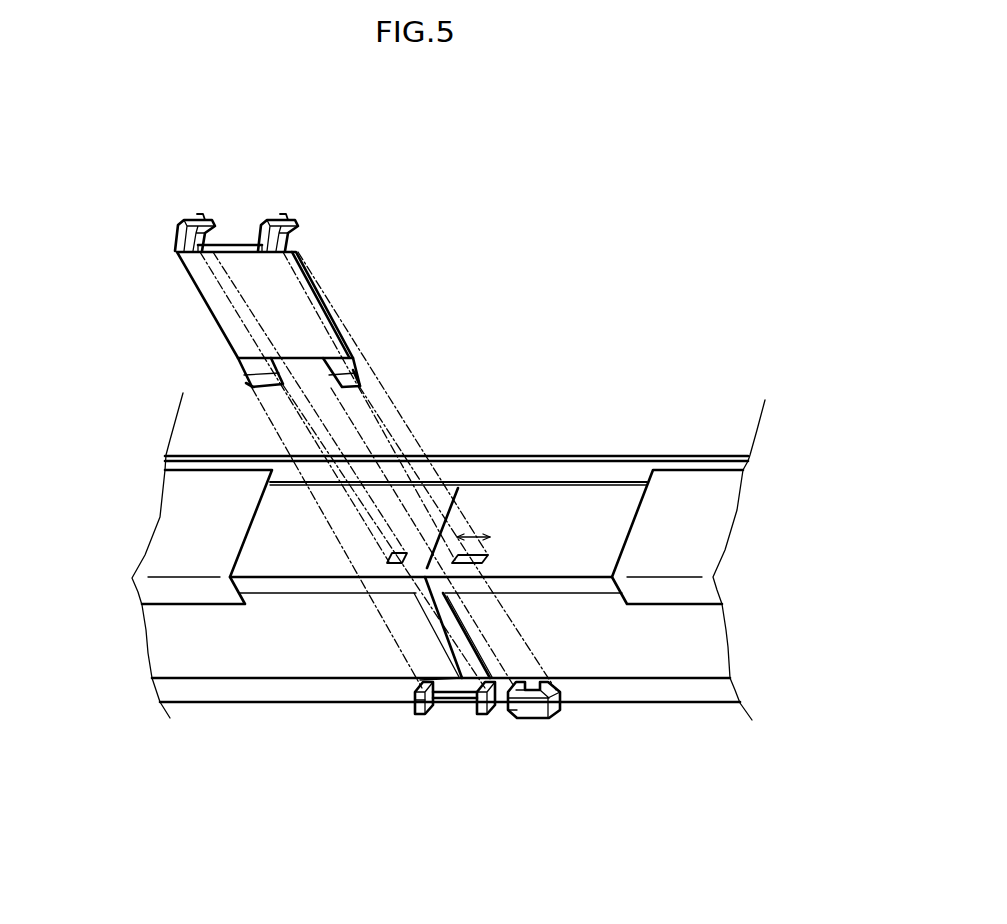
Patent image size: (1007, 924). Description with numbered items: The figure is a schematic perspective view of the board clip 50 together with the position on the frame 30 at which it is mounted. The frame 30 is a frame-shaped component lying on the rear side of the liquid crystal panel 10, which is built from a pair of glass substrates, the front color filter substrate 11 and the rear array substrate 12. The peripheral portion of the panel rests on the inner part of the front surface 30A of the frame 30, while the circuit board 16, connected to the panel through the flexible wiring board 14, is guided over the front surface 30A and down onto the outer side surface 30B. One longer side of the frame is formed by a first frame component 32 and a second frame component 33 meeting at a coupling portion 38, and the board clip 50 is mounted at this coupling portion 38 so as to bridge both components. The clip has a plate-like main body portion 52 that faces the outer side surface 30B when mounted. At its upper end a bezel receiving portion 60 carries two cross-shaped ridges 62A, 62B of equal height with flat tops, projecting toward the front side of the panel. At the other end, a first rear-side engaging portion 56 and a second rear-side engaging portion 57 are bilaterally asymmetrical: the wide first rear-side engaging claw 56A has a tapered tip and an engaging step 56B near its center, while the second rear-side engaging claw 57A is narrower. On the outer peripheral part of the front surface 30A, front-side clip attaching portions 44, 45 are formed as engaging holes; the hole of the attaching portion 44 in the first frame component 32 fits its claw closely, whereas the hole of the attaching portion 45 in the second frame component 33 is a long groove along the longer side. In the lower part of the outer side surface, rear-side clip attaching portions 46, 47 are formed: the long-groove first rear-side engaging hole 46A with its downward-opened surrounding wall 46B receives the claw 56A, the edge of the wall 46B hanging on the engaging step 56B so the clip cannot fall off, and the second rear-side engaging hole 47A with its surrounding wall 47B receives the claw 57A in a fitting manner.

The liquid crystal panel 10 is at (727, 430).
The color filter substrate 11 is at (610, 413).
The array substrate 12 is at (637, 472).
The flexible wiring board 14 is at (195, 505).
The circuit board 16 is at (172, 653).
The frame 30 is at (722, 708).
The front surface 30A is at (497, 503).
The outer side surface 30B is at (226, 690).
The first frame component 32 is at (308, 708).
The second frame component 33 is at (613, 707).
The coupling portion 38 is at (448, 507).
The front-side clip attaching portion 44 is at (396, 548).
The front-side clip attaching portion 45 is at (482, 555).
The rear-side clip attaching portion 46 is at (447, 708).
The first rear-side engaging hole 46A is at (450, 682).
The surrounding wall 46B is at (413, 705).
The rear-side clip attaching portion 47 is at (540, 720).
The second rear-side engaging hole 47A is at (535, 682).
The surrounding wall 47B is at (510, 713).
The board clip 50 is at (190, 316).
The main body portion 52 is at (203, 268).
The first rear-side engaging portion 56 is at (79, 356).
The first rear-side engaging claw 56A is at (240, 360).
The engaging step 56B is at (240, 368).
The second rear-side engaging portion 57 is at (357, 362).
The second rear-side engaging claw 57A is at (358, 366).
The bezel receiving portion 60 is at (305, 215).
The ridge 62A is at (182, 220).
The ridge 62B is at (283, 220).